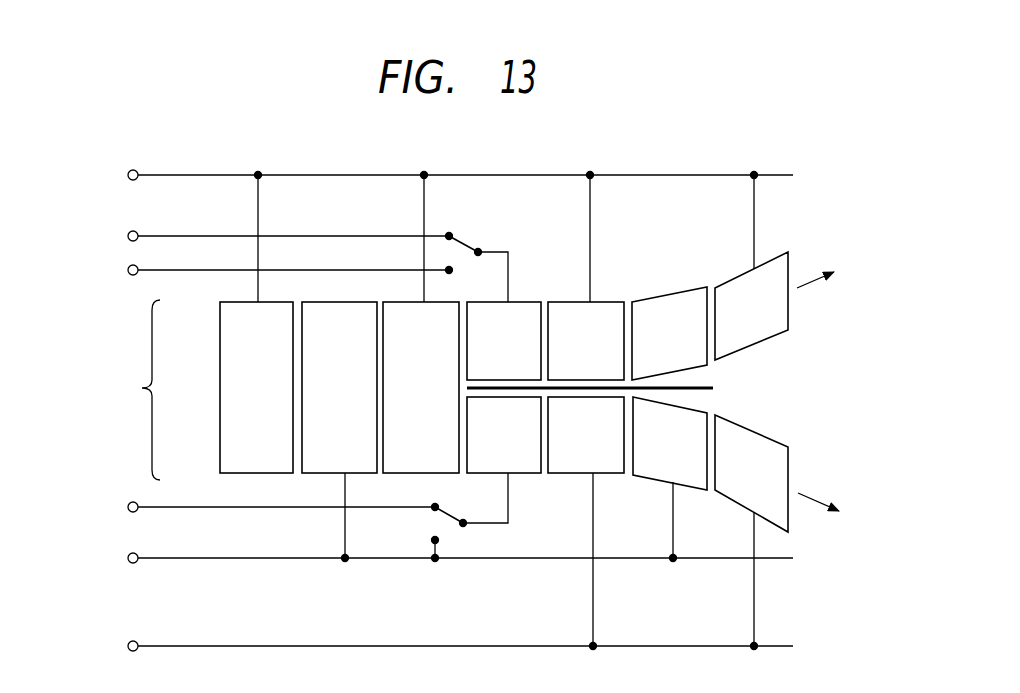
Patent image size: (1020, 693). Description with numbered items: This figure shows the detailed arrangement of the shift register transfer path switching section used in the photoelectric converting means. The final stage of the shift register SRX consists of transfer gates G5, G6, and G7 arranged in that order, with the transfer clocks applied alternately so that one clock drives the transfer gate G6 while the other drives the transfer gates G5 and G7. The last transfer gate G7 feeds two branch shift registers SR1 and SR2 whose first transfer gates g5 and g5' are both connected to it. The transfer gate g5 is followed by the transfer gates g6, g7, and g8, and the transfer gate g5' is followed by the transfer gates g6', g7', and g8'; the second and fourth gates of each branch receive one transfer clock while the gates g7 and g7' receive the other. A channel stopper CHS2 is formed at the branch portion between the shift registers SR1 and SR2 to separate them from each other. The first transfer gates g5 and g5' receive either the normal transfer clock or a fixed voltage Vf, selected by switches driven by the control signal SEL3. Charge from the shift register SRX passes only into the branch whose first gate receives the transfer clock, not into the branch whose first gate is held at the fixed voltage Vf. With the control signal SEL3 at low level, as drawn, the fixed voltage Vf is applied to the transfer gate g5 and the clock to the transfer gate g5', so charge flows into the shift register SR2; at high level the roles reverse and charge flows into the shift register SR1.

The fixed voltage Vf is at (275, 390).
The control signal SEL3 is at (465, 250).
The shift register SRX is at (210, 388).
The transfer gate G5 is at (256, 387).
The transfer gate G6 is at (339, 387).
The last transfer gate G7 is at (421, 387).
The first transfer gate g5' is at (504, 341).
The transfer gate g6' is at (586, 341).
The transfer gate g7' is at (669, 333).
The transfer gate g8' is at (751, 306).
The first transfer gate g5 is at (504, 435).
The transfer gate g6 is at (586, 435).
The transfer gate g7 is at (670, 443).
The transfer gate g8 is at (751, 473).
The channel stopper CHS2 is at (703, 386).
The shift register SR2 is at (819, 265).
The shift register SR1 is at (822, 489).